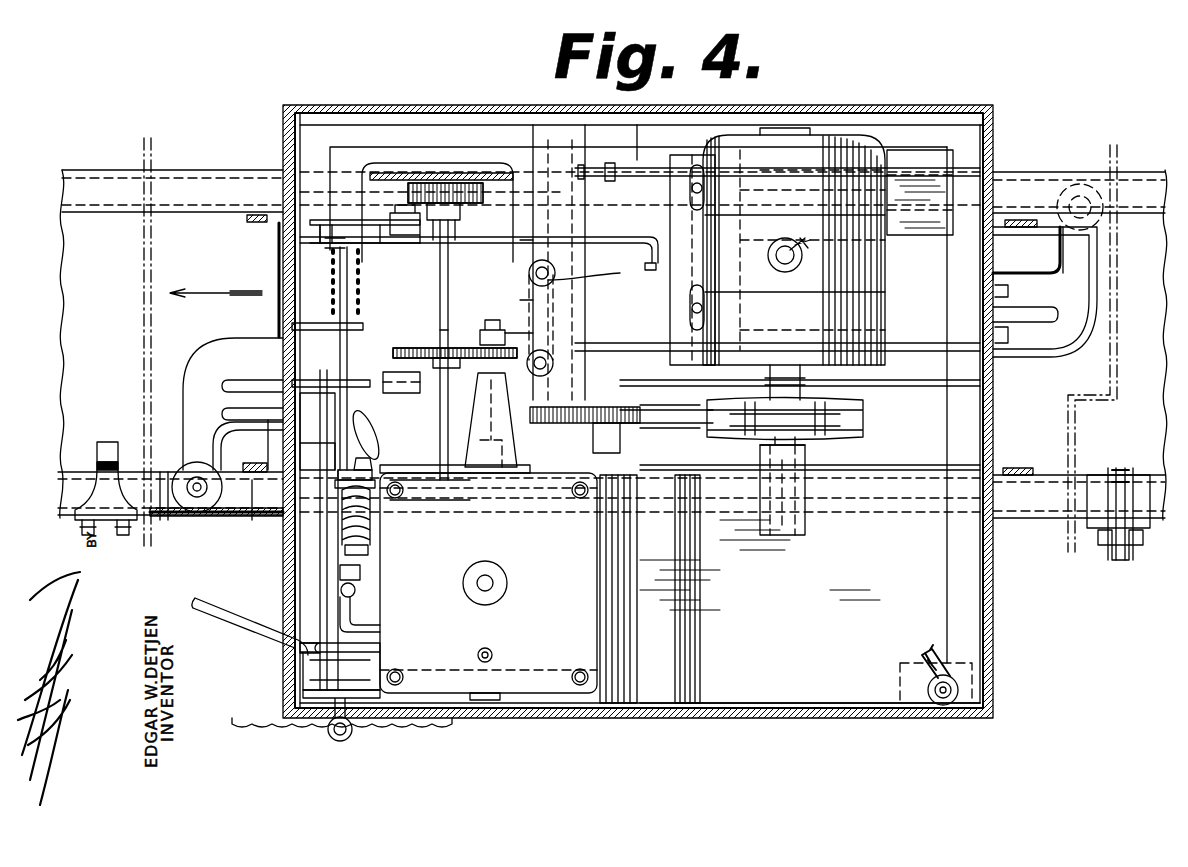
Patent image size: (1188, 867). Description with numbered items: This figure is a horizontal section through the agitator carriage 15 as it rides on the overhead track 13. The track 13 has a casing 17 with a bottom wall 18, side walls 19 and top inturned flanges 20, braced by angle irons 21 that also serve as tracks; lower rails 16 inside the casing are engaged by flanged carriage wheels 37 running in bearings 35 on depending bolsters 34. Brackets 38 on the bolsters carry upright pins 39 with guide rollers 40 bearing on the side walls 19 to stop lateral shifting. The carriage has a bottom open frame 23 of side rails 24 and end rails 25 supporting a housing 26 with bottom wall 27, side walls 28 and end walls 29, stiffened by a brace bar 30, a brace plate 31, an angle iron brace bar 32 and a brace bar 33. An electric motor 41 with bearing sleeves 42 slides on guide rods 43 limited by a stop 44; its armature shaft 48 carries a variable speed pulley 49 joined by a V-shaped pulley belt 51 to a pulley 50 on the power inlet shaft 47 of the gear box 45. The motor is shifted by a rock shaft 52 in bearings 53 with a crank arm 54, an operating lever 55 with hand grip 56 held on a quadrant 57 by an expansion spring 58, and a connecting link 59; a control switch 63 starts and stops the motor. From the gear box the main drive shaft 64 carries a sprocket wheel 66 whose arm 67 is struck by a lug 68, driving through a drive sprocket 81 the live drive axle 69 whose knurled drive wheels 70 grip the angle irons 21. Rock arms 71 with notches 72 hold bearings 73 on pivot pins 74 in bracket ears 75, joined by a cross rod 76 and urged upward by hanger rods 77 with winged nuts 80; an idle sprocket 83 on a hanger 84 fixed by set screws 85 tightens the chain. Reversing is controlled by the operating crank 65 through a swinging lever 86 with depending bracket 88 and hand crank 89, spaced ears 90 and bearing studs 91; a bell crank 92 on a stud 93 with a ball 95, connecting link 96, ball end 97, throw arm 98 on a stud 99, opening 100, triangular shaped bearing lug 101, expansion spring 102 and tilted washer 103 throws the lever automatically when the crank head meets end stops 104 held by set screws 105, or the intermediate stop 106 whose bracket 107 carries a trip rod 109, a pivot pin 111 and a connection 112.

The overhead track 13 is at (1020, 524).
The carriage 15 is at (921, 106).
The rails 16 is at (232, 517).
The casing 17 is at (192, 520).
The bottom wall 18 is at (80, 402).
The side walls 19 is at (252, 524).
The top inturned flanges 20 is at (62, 192).
The angle irons 21 is at (163, 470).
The bottom open frame 23 is at (993, 648).
The side rails 24 is at (890, 105).
The end rails 25 is at (283, 152).
The housing 26 is at (690, 719).
The bottom wall 27 is at (785, 657).
The side walls 28 is at (805, 105).
The end walls 29 is at (283, 133).
The brace bar 30 is at (817, 417).
The brace plate 31 is at (585, 300).
The angle iron brace bar 32 is at (848, 492).
The brace bar 33 is at (700, 577).
The bolsters 34 is at (275, 434).
The bearings 35 is at (275, 322).
The flanged carriage wheels 37 is at (250, 227).
The brackets 38 is at (215, 350).
The upright pins 39 is at (200, 512).
The guide rollers 40 is at (203, 460).
The electric motor 41 is at (794, 246).
The bearing sleeves 42 is at (905, 224).
The guide rods 43 is at (680, 155).
The stop 44 is at (625, 168).
The gear box 45 is at (520, 697).
The power inlet shaft 47 is at (680, 430).
The armature shaft 48 is at (850, 394).
The variable speed pulley 49 is at (835, 442).
The pulley 50 is at (635, 387).
The V-shaped pulley belt 51 is at (708, 430).
The rock shaft 52 is at (355, 340).
The bearings 53 is at (370, 320).
The crank arm 54 is at (340, 220).
The operating lever 55 is at (340, 742).
The hand grip 56 is at (330, 737).
The quadrant 57 is at (430, 724).
The expansion spring 58 is at (365, 284).
The connecting link 59 is at (555, 260).
The control switch 63 is at (952, 719).
The main drive shaft 64 is at (485, 320).
The operating crank 65 is at (380, 614).
The sprocket wheel 66 is at (535, 339).
The forwardly extending arm 67 is at (584, 286).
The radially extending lug 68 is at (533, 272).
The live drive axle 69 is at (450, 272).
The drive wheels 70 is at (440, 183).
The rock arms 71 is at (385, 245).
The notches 72 is at (440, 242).
The bearings 73 is at (450, 222).
The pivot pins 74 is at (405, 205).
The bracket ears 75 is at (354, 254).
The cross rod 76 is at (590, 434).
The hanger rods 77 is at (560, 272).
The winged nuts 80 is at (575, 252).
The drive sprocket 81 is at (440, 332).
The idle sprocket 83 is at (393, 355).
The hanger 84 is at (383, 393).
The set screws 85 is at (433, 366).
The swinging lever 86 is at (318, 592).
The depending bracket 88 is at (300, 662).
The hand crank 89 is at (255, 627).
The spaced ears 90 is at (362, 574).
The bearing studs 91 is at (356, 592).
The bell crank 92 is at (490, 477).
The stud 93 is at (491, 420).
The ball 95 is at (380, 424).
The connecting link 96 is at (350, 414).
The ball end 97 is at (315, 454).
The throw arm 98 is at (338, 484).
The stud 99 is at (345, 552).
The opening 100 is at (372, 457).
The triangular shaped bearing lug 101 is at (415, 502).
The expansion spring 102 is at (342, 520).
The tilted washer 103 is at (340, 494).
The end stops 104 is at (108, 457).
The set screws 105 is at (125, 540).
The intermediate stop 106 is at (1098, 542).
The bracket 107 is at (1110, 480).
The trip rod 109 is at (1130, 477).
The pivot pin 111 is at (1143, 540).
The connection 112 is at (1128, 557).